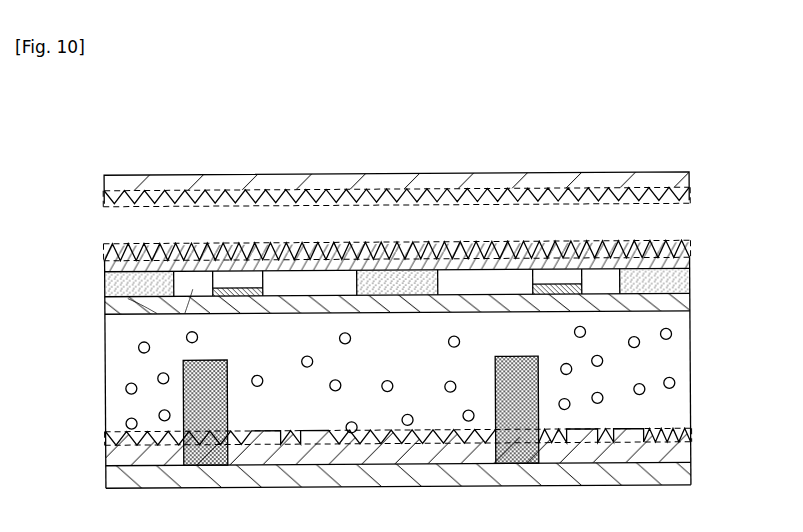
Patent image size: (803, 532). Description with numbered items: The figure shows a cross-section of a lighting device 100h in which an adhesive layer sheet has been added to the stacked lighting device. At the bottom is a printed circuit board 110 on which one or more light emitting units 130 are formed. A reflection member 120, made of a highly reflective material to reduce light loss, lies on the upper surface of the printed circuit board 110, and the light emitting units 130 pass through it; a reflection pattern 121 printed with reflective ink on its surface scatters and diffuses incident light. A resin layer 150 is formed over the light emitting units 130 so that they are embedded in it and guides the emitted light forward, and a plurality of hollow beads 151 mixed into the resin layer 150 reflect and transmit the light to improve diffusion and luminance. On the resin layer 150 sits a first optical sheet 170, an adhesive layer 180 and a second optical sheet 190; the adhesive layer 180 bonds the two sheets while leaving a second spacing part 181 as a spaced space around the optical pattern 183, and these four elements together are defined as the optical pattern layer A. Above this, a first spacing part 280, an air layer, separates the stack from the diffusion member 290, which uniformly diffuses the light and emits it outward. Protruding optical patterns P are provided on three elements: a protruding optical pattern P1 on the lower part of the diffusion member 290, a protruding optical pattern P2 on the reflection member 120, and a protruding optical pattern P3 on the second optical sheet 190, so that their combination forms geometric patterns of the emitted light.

The lighting device 100h is at (347, 150).
The diffusion member 290 is at (690, 187).
The first spacing part 280 is at (677, 227).
The second optical sheet 190 is at (682, 262).
The adhesive layer 180 is at (692, 283).
The optical pattern 183 is at (237, 278).
The second spacing part 181 is at (103, 288).
The optical pattern layer A is at (767, 252).
The first optical sheet 170 is at (653, 313).
The resin layer 150 is at (680, 367).
The bead 151 is at (138, 347).
The light emitting unit 130 is at (180, 398).
The reflection pattern 121 is at (636, 428).
The reflection member 120 is at (680, 452).
The printed circuit board 110 is at (682, 473).
The protruding optical patterns P is at (104, 437).
The protruding optical pattern P1 is at (168, 187).
The protruding optical pattern P2 is at (272, 243).
The protruding optical pattern P3 is at (364, 287).